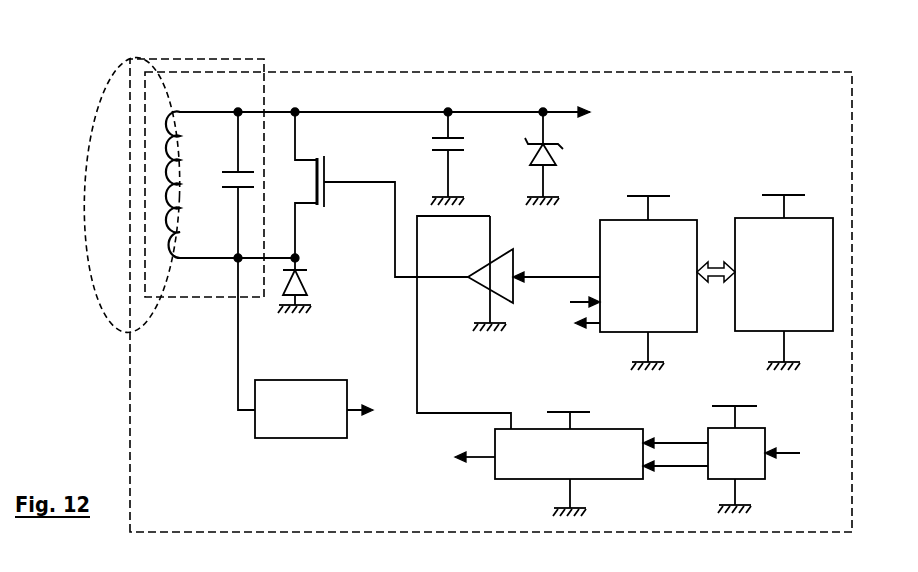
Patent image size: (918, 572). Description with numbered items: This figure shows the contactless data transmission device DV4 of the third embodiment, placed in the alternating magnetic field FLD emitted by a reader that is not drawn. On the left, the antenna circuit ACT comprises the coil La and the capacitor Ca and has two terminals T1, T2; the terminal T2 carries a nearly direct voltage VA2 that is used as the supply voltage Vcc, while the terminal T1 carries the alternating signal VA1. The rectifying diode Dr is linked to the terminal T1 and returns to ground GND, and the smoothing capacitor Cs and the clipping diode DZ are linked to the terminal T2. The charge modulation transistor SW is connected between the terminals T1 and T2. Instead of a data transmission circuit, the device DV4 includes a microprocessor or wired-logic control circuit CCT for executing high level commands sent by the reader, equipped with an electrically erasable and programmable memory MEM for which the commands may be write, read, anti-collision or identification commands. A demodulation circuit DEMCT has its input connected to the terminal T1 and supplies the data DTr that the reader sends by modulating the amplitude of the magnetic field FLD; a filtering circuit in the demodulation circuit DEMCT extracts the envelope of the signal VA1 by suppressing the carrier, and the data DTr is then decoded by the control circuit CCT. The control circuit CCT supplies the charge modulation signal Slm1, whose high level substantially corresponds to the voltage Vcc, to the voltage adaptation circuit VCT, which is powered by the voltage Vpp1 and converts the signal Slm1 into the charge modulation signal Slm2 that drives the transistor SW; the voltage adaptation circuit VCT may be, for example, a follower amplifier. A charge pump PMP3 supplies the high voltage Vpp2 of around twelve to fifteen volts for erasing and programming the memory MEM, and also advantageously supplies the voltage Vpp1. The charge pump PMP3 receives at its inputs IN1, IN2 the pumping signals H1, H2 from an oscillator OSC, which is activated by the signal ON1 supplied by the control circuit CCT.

The contactless device DV4 is at (185, 522).
The antenna circuit ACT is at (263, 102).
The alternating magnetic field FLD is at (103, 303).
The coil La is at (165, 262).
The nearly direct voltage VA2 is at (379, 100).
The alternating signal VA1 is at (237, 248).
The terminal T2 is at (238, 112).
The terminal T1 is at (237, 260).
The capacitor Ca is at (227, 168).
The charge modulation transistor SW is at (325, 192).
The smoothing capacitor Cs is at (437, 148).
The clipping diode DZ is at (549, 168).
The supply voltage Vcc is at (686, 265).
The rectifying diode Dr is at (307, 287).
The ground GND is at (324, 309).
The demodulation circuit DEMCT is at (333, 421).
The data DTr is at (473, 356).
The voltage adaptation circuit VCT is at (483, 290).
The charge modulation signal Slm2 is at (396, 229).
The charge modulation signal Slm1 is at (556, 267).
The voltage Vpp1 is at (492, 318).
The signal ON1 is at (686, 387).
The control circuit CCT is at (667, 287).
The electrically erasable and programmable memory MEM is at (803, 286).
The charge pump PMP3 is at (593, 466).
The high voltage Vpp2 is at (454, 457).
The input IN1 is at (629, 443).
The input IN2 is at (629, 468).
The pumping signal H1 is at (675, 435).
The pumping signal H2 is at (675, 458).
The oscillator OSC is at (755, 462).